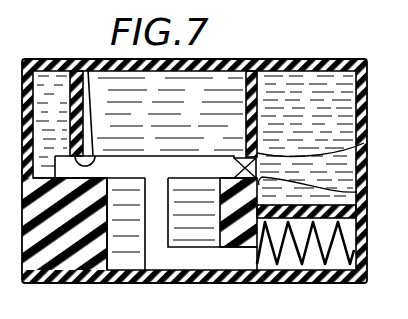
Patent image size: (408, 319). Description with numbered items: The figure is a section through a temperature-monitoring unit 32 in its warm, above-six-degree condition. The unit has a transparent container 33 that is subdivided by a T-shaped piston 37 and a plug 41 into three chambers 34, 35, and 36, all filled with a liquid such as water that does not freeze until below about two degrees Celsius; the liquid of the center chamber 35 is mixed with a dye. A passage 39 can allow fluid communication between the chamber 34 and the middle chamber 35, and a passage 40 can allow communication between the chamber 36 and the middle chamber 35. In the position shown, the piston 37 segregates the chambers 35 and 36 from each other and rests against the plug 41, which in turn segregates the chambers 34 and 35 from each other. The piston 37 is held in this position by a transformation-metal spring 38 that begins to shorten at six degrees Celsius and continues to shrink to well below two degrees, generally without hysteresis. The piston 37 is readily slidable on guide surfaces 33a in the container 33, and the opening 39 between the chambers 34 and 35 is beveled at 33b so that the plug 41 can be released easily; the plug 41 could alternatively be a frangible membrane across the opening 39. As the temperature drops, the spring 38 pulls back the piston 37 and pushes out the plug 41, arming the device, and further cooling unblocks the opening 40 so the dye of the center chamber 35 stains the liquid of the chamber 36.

The temperature-monitoring unit 32 is at (327, 48).
The transparent container 33 is at (256, 72).
The guide surfaces 33a is at (222, 182).
The bevel 33b is at (256, 185).
The chamber 34 is at (327, 103).
The center chamber 35 is at (209, 100).
The chamber 36 is at (48, 90).
The T-shaped piston 37 is at (200, 258).
The transformation-metal spring 38 is at (306, 245).
The passage 39 is at (360, 146).
The passage 40 is at (88, 66).
The plug 41 is at (357, 192).